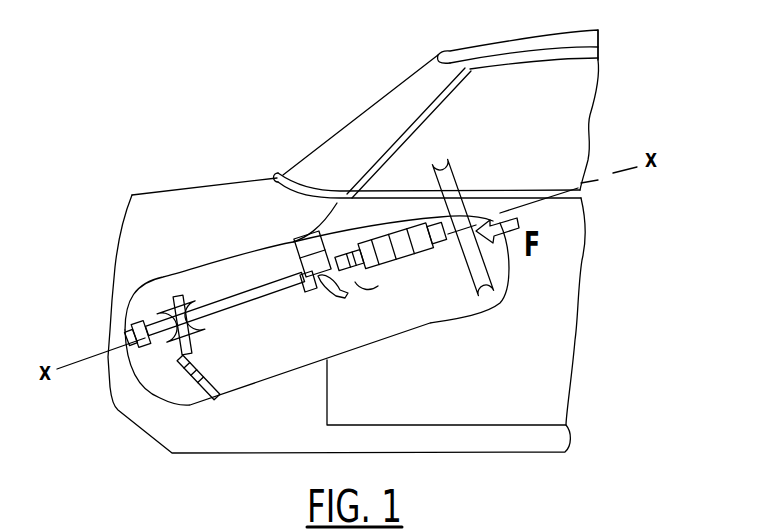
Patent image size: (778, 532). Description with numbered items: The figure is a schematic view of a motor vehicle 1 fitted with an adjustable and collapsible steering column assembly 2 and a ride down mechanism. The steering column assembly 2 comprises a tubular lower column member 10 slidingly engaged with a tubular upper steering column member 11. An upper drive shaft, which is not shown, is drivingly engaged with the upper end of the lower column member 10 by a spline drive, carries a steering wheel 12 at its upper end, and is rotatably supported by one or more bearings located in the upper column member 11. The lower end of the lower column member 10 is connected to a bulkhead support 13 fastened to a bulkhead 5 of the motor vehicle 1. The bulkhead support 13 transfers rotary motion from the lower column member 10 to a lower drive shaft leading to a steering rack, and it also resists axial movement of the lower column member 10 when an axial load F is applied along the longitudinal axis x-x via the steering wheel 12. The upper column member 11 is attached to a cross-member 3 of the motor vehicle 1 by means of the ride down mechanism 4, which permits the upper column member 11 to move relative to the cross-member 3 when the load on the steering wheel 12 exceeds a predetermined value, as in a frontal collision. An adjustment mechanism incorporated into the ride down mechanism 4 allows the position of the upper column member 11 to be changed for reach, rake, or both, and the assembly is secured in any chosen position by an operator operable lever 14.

The motor vehicle 1 is at (330, 78).
The steering column assembly 2 is at (242, 276).
The cross-member 3 is at (297, 240).
The ride down mechanism 4 is at (317, 292).
The bulkhead 5 is at (175, 370).
The lower column member 10 is at (210, 298).
The upper steering column member 11 is at (368, 288).
The steering wheel 12 is at (430, 167).
The bulkhead support 13 is at (190, 345).
The operator operable lever 14 is at (333, 283).